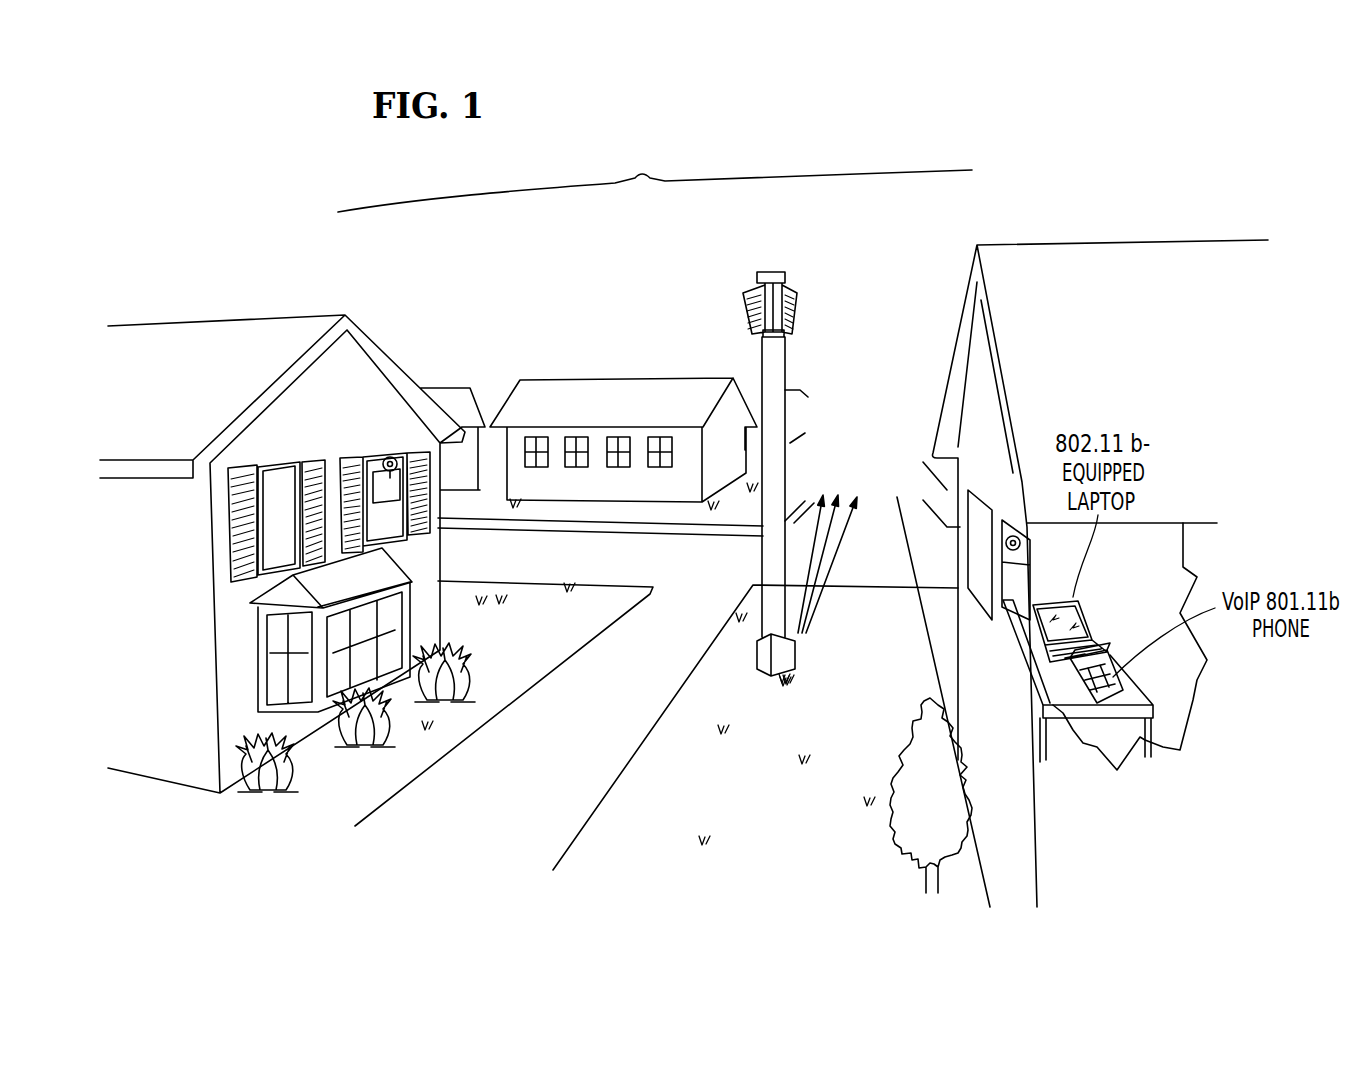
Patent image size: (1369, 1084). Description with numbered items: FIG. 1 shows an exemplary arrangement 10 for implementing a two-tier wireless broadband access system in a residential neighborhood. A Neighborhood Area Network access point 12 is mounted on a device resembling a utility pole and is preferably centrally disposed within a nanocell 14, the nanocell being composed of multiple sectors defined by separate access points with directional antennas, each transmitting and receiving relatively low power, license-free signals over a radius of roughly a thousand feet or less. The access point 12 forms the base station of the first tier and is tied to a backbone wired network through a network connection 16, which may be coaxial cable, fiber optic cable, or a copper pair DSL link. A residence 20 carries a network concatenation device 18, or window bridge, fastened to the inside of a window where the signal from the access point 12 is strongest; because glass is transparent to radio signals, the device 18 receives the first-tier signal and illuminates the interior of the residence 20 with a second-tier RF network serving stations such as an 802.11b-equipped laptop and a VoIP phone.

The arrangement 10 is at (508, 803).
The Neighborhood Area Network access point 12 is at (745, 297).
The nanocell 14 is at (643, 176).
The network connection 16 is at (832, 547).
The network concatenation device 18 is at (398, 462).
The residence 20 is at (308, 326).